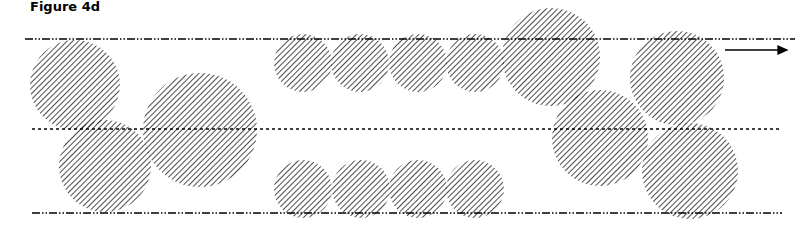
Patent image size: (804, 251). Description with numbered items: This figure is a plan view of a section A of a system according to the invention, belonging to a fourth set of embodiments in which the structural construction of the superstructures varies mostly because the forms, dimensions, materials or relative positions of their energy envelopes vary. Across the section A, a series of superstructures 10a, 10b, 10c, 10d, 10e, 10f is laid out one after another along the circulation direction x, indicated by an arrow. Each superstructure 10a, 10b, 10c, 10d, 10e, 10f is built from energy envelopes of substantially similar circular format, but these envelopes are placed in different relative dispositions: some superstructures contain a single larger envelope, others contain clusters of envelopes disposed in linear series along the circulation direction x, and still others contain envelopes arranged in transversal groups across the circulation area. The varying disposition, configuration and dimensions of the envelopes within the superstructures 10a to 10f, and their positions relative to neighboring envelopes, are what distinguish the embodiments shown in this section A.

The superstructure 10a is at (84, 116).
The superstructure 10b is at (200, 103).
The superstructure 10c is at (332, 119).
The superstructure 10d is at (446, 119).
The superstructure 10e is at (575, 97).
The superstructure 10f is at (684, 120).
The circulation direction x is at (756, 58).
The section A is at (407, 198).